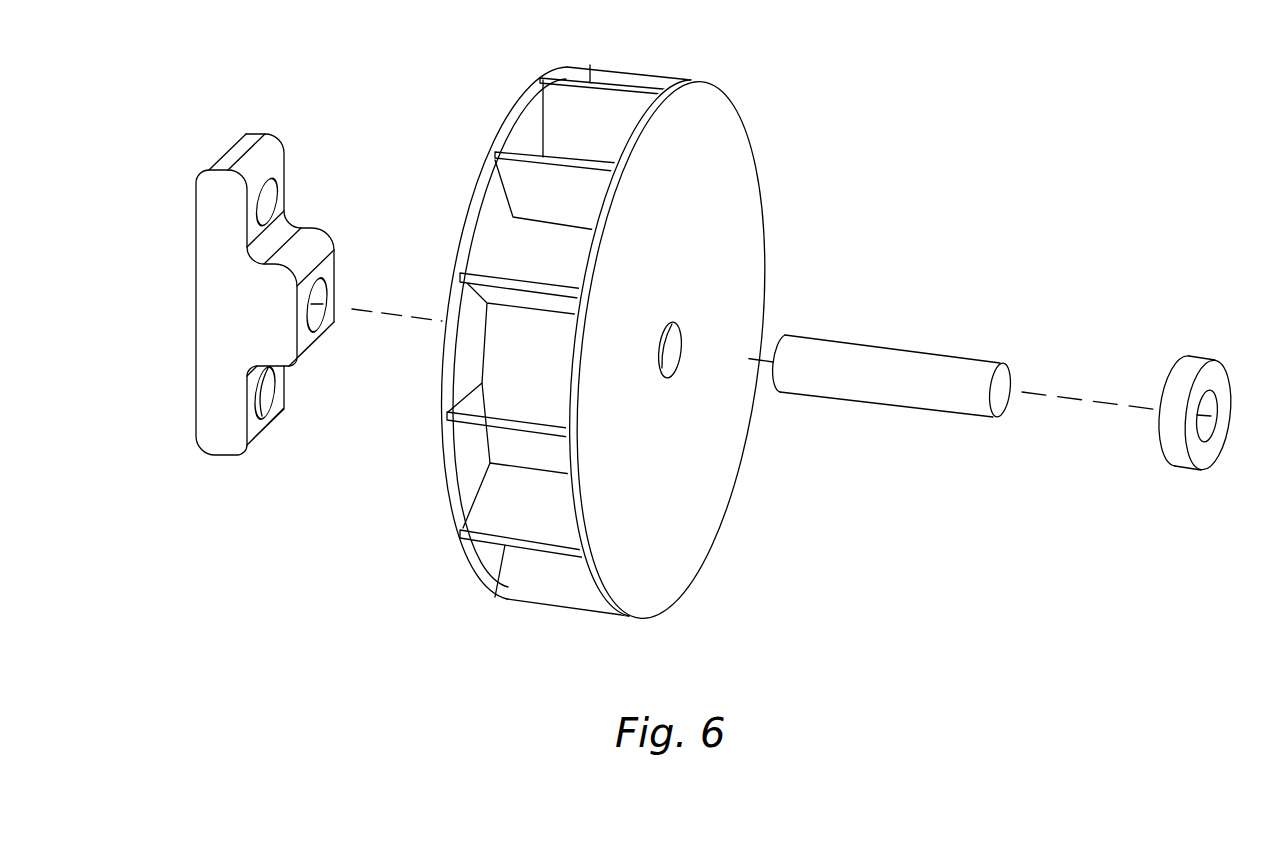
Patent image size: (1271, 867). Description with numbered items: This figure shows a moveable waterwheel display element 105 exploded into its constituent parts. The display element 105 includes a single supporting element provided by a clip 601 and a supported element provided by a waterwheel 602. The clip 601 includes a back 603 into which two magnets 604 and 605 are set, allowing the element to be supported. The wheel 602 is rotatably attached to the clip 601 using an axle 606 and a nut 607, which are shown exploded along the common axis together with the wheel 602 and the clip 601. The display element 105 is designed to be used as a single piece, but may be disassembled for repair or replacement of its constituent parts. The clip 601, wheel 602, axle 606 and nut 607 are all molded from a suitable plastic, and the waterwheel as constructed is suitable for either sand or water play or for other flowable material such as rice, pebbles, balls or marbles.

The waterwheel display element 105 is at (872, 99).
The clip 601 is at (272, 142).
The waterwheel 602 is at (660, 590).
The back 603 is at (203, 378).
The magnet 604 is at (275, 200).
The magnet 605 is at (268, 413).
The axle 606 is at (888, 396).
The nut 607 is at (1177, 458).